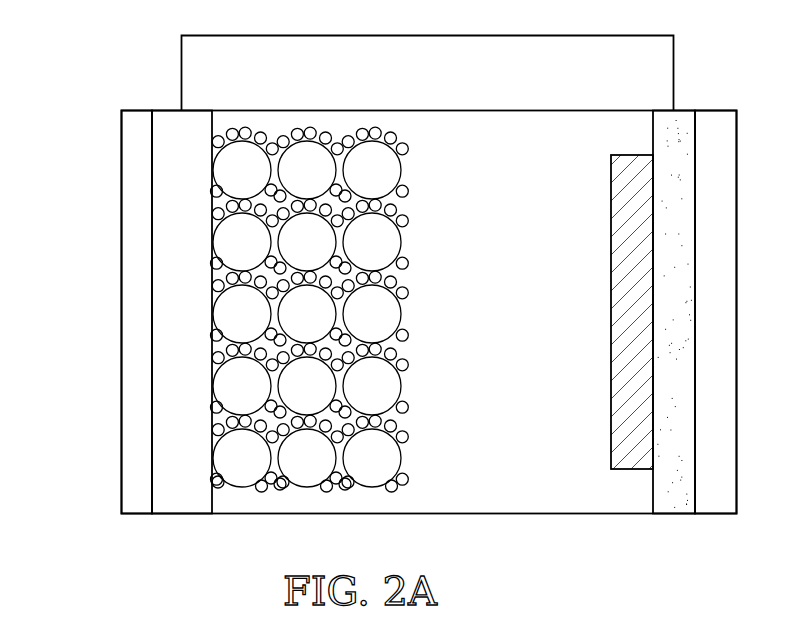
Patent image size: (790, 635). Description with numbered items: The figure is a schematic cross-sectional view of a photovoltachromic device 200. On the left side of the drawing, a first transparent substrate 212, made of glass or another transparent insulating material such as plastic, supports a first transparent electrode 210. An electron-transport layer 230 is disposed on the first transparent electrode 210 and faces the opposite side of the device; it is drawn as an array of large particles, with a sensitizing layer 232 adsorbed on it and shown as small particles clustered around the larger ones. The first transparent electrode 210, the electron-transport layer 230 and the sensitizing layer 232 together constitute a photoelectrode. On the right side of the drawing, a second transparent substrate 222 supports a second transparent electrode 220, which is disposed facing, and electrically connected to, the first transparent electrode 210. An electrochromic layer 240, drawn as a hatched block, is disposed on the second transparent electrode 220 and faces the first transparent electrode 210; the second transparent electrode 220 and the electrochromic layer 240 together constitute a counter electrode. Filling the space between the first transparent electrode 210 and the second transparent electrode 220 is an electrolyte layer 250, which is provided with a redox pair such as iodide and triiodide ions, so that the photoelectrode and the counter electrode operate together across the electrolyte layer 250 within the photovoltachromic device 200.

The photovoltachromic device 200 is at (88, 42).
The first transparent electrode 210 is at (188, 503).
The first transparent substrate 212 is at (138, 503).
The second transparent electrode 220 is at (675, 500).
The second transparent substrate 222 is at (717, 503).
The electron-transport layer 230 is at (307, 146).
The sensitizing layer 232 is at (375, 126).
The electrochromic layer 240 is at (632, 460).
The electrolyte layer 250 is at (481, 125).